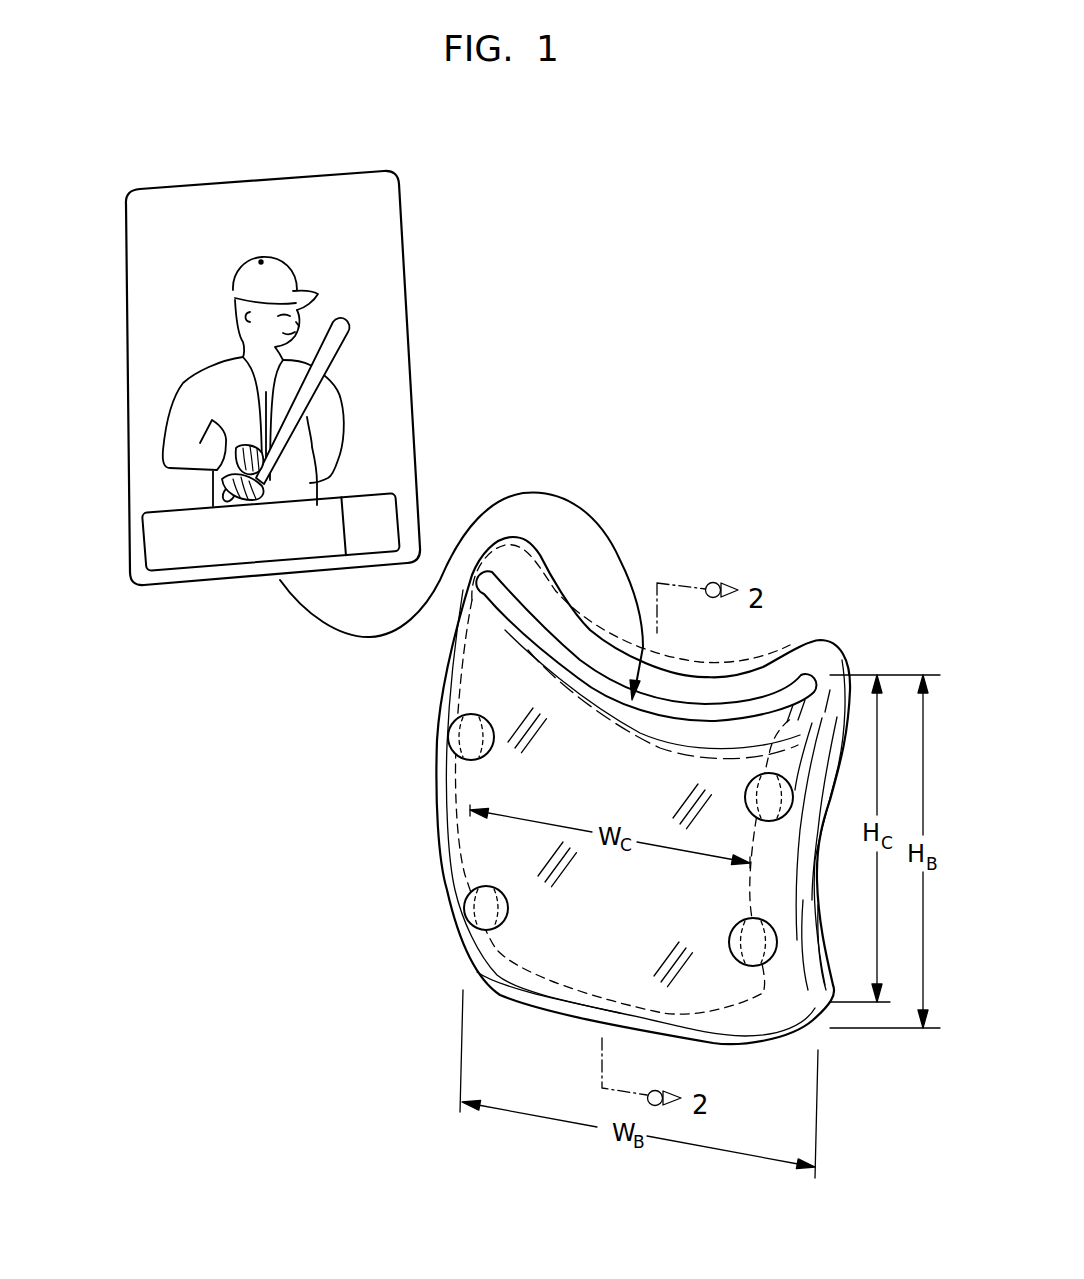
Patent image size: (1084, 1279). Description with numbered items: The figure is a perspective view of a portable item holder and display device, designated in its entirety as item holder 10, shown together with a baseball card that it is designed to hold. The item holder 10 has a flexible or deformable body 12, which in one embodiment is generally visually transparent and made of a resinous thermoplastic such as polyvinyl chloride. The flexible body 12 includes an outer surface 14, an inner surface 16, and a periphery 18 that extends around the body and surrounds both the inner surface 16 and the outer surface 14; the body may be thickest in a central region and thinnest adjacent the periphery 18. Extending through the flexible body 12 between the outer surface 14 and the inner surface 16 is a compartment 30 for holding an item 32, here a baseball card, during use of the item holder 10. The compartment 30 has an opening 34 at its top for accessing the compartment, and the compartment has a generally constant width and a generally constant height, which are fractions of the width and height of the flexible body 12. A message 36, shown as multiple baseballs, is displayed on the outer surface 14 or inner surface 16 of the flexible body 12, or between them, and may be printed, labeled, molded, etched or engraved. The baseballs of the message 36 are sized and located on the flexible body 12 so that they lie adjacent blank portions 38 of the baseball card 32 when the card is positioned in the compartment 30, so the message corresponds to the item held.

The item holder 10 is at (674, 512).
The flexible body 12 is at (441, 688).
The outer surface 14 is at (642, 936).
The inner surface 16 is at (805, 798).
The periphery 18 is at (573, 1015).
The compartment 30 is at (460, 872).
The item 32 is at (404, 238).
The opening 34 is at (803, 648).
The message 36 is at (447, 767).
The blank portions 38 is at (163, 336).